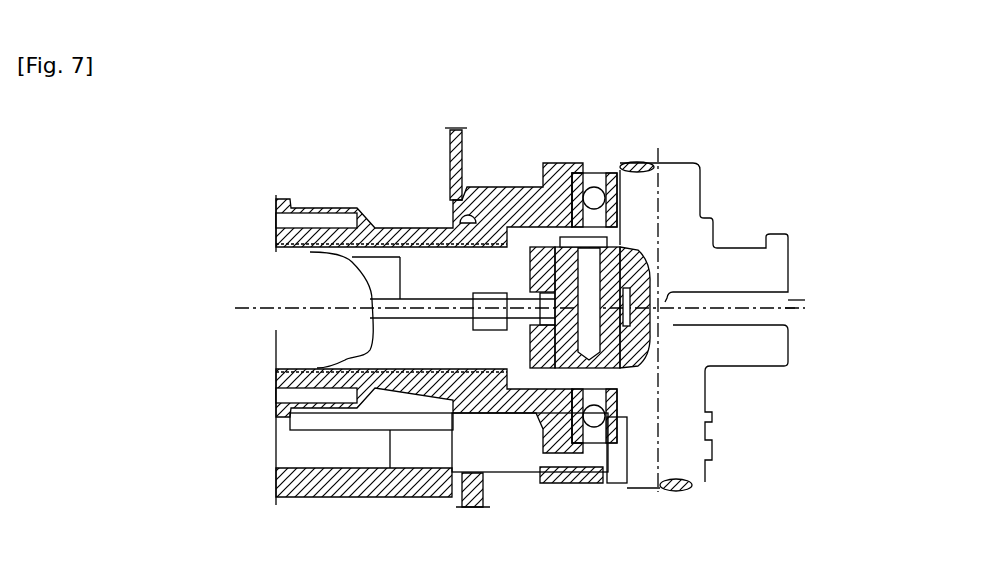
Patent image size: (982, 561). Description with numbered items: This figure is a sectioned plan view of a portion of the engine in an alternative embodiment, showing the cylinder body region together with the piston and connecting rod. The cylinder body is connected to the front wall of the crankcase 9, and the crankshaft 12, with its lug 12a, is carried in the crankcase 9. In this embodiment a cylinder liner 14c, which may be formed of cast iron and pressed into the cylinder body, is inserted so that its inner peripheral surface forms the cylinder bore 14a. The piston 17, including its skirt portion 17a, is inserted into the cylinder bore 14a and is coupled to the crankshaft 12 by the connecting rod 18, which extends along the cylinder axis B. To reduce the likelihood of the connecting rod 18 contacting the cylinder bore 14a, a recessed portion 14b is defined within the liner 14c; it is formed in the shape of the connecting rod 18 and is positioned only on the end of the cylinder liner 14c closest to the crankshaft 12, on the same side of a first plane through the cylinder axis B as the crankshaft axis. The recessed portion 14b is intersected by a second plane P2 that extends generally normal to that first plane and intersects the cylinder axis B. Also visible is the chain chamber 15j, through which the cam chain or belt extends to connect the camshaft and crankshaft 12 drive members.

The crankcase 9 is at (452, 130).
The connecting rod 18 is at (400, 248).
The cylinder bore 14a is at (430, 245).
The lug of rotor 12a is at (652, 170).
The crankshaft 12 is at (707, 190).
The cylinder liner 14c is at (270, 247).
The piston 17 is at (283, 322).
The skirt portion 17a is at (363, 313).
The recessed portion 14b is at (505, 320).
The chain chamber 15j is at (325, 458).
The cylinder axis B is at (793, 303).
The second plane P2 is at (787, 303).